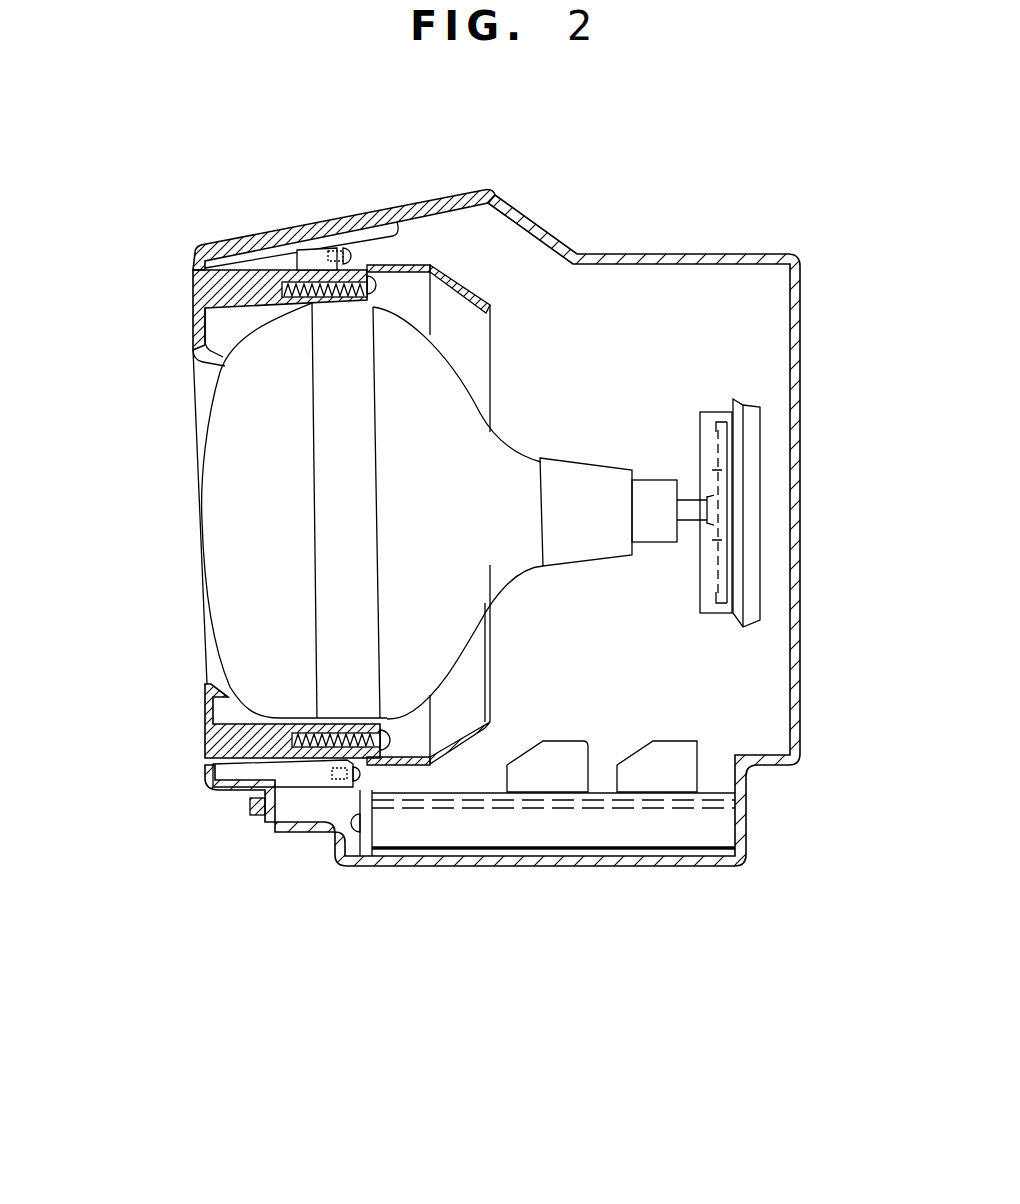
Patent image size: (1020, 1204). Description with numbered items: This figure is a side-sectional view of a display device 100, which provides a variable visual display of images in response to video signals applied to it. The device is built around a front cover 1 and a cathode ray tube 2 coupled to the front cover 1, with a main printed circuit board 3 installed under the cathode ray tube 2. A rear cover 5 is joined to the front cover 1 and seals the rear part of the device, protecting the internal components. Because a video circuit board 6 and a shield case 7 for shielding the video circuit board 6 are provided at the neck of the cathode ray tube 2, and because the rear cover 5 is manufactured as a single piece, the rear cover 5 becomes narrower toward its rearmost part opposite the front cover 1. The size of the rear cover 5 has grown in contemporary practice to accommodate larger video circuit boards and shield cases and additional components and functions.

The display device 100 is at (621, 188).
The front cover 1 is at (269, 236).
The cathode ray tube 2 is at (243, 563).
The main printed circuit board 3 is at (497, 800).
The rear cover 5 is at (706, 262).
The video circuit board 6 is at (722, 447).
The shield case 7 is at (748, 584).